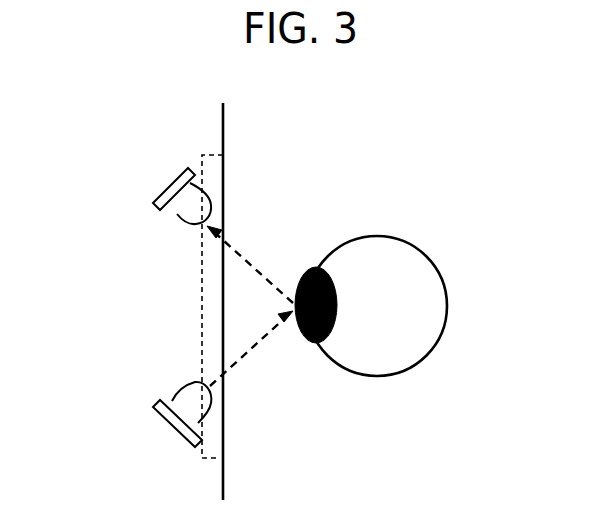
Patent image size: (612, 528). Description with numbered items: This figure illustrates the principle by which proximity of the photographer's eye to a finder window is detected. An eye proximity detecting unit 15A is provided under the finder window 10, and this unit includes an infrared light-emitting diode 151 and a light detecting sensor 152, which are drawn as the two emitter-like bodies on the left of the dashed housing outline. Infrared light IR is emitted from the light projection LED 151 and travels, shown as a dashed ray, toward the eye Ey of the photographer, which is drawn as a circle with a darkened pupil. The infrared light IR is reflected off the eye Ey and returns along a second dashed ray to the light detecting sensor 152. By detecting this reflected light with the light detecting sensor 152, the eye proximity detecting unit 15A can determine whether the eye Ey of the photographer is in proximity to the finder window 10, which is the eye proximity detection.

The eye proximity detecting unit 15A is at (238, 182).
The finder window 10 is at (201, 300).
The light detecting sensor 152 is at (184, 222).
The infrared light-emitting diode 151 is at (178, 394).
The infrared light IR is at (254, 340).
The eye Ey is at (300, 270).